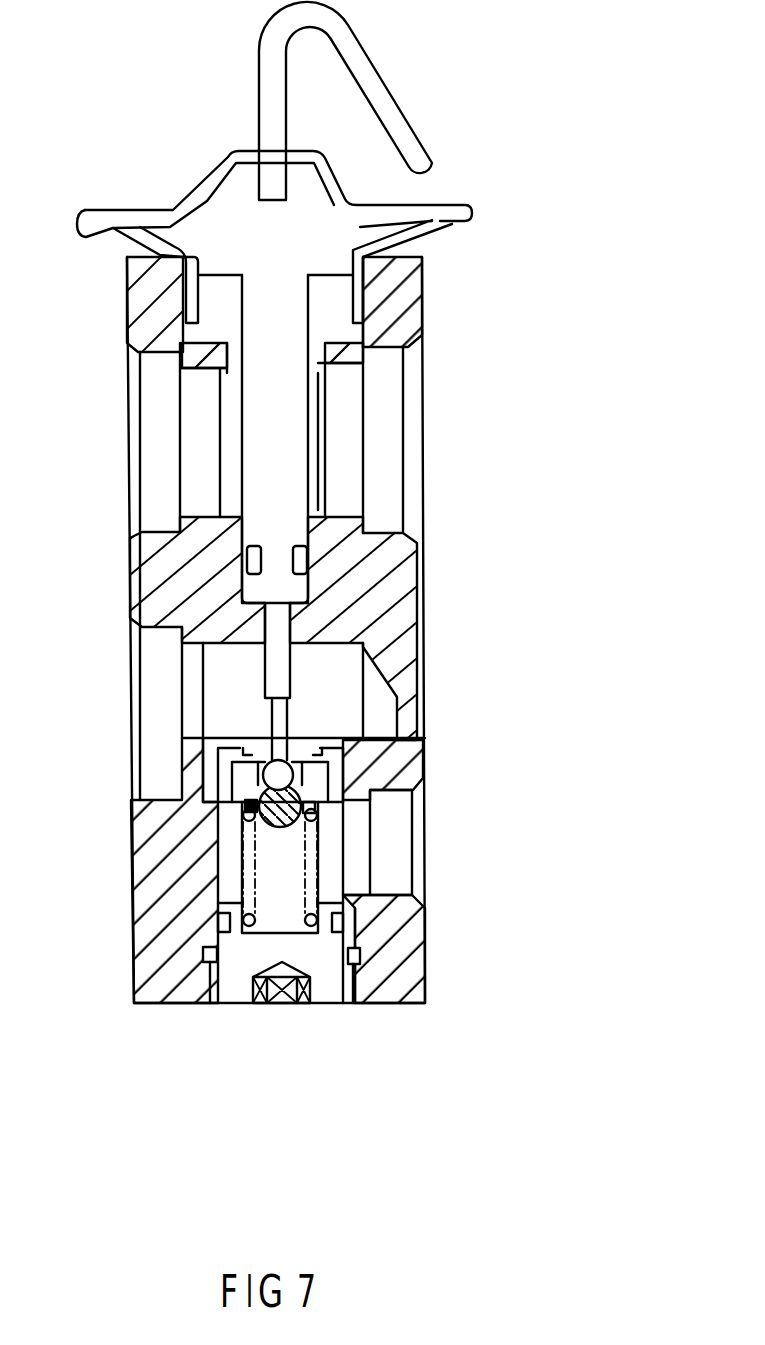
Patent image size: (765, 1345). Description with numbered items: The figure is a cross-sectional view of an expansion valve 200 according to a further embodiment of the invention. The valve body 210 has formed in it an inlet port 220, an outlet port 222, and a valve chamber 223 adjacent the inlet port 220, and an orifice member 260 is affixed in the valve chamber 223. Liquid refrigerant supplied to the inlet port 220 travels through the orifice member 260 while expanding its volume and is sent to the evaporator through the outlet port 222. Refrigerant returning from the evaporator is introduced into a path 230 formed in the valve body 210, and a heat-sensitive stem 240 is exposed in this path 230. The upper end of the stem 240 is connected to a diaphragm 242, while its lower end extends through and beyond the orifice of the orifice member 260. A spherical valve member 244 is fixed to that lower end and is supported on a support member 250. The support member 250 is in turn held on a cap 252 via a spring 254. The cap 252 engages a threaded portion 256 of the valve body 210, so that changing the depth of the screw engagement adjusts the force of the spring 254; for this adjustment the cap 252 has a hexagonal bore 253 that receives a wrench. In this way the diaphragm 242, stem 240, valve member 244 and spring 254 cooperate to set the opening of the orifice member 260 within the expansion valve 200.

The expansion valve 200 is at (490, 544).
The valve body 210 is at (385, 627).
The inlet port 220 is at (393, 847).
The outlet port 222 is at (215, 706).
The valve chamber 223 is at (283, 890).
The path 230 is at (157, 445).
The heat-sensitive stem 240 is at (292, 437).
The diaphragm 242 is at (170, 232).
The valve member 244 is at (278, 775).
The support member 250 is at (265, 832).
The cap 252 is at (230, 990).
The hexagonal bore 253 is at (280, 1000).
The spring 254 is at (313, 935).
The threaded portion 256 is at (383, 987).
The orifice member 260 is at (345, 752).